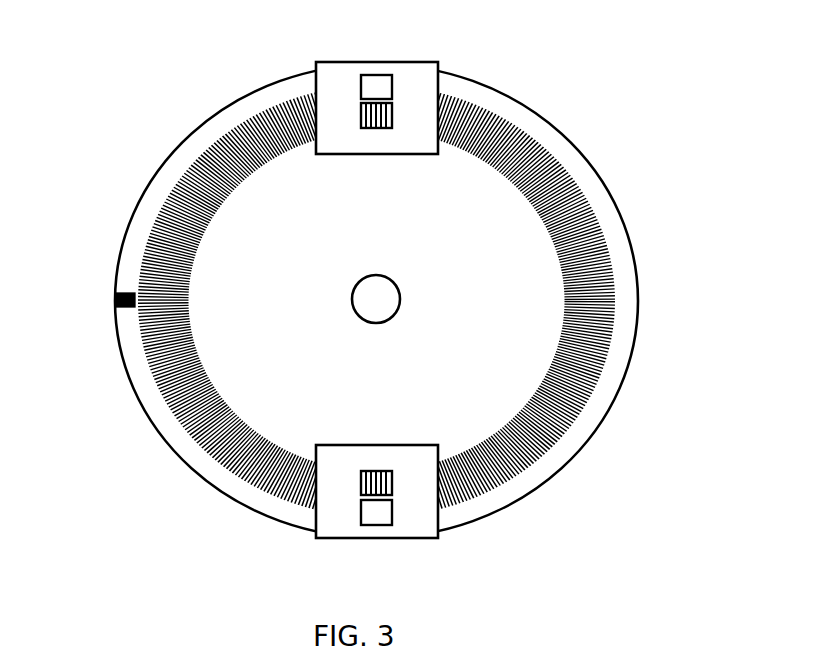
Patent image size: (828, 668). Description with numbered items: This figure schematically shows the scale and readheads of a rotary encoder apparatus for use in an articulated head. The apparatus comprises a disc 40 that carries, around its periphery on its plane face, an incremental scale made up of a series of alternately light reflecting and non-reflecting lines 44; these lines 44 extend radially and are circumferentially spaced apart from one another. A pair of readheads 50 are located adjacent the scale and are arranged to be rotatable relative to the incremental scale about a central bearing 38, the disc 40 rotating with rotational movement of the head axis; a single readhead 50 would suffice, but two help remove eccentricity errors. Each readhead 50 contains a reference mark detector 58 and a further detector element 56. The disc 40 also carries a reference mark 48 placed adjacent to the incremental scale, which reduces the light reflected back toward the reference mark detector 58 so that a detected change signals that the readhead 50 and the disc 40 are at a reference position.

The central bearing 38 is at (383, 276).
The disc 40 is at (598, 173).
The lines 44 is at (617, 293).
The reference mark 48 is at (116, 300).
The readhead 50 is at (378, 62).
The sensor element (grating) 56 is at (361, 118).
The reference mark detector 58 is at (393, 88).